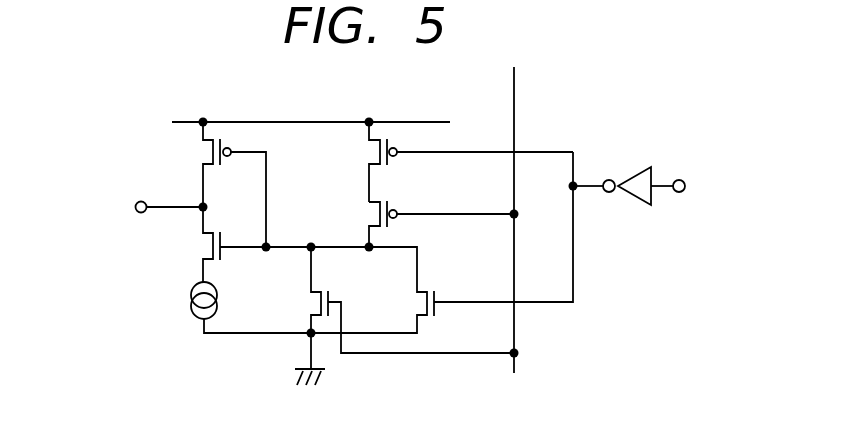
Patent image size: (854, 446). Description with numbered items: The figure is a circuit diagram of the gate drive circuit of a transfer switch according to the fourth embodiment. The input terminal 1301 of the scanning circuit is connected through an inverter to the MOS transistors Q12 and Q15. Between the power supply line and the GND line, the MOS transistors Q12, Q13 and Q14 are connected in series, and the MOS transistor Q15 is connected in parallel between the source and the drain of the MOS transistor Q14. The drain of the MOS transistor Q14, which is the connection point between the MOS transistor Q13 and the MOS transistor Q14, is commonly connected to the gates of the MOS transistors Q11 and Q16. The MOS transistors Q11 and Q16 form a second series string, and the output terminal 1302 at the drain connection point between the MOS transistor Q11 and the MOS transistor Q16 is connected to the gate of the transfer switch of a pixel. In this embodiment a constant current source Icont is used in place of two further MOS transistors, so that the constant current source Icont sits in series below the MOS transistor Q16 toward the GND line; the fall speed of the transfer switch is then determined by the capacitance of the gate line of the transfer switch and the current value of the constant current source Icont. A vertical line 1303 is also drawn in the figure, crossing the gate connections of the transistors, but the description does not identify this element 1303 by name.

The input terminal 1301 is at (684, 191).
The output terminal 1302 is at (135, 208).
The signal line 1303 is at (514, 120).
The MOS transistor Q11 is at (211, 184).
The MOS transistor Q12 is at (449, 162).
The MOS transistor Q13 is at (419, 224).
The MOS transistor Q14 is at (390, 300).
The MOS transistor Q15 is at (442, 242).
The MOS transistor Q16 is at (233, 244).
The constant current source Icont is at (214, 307).